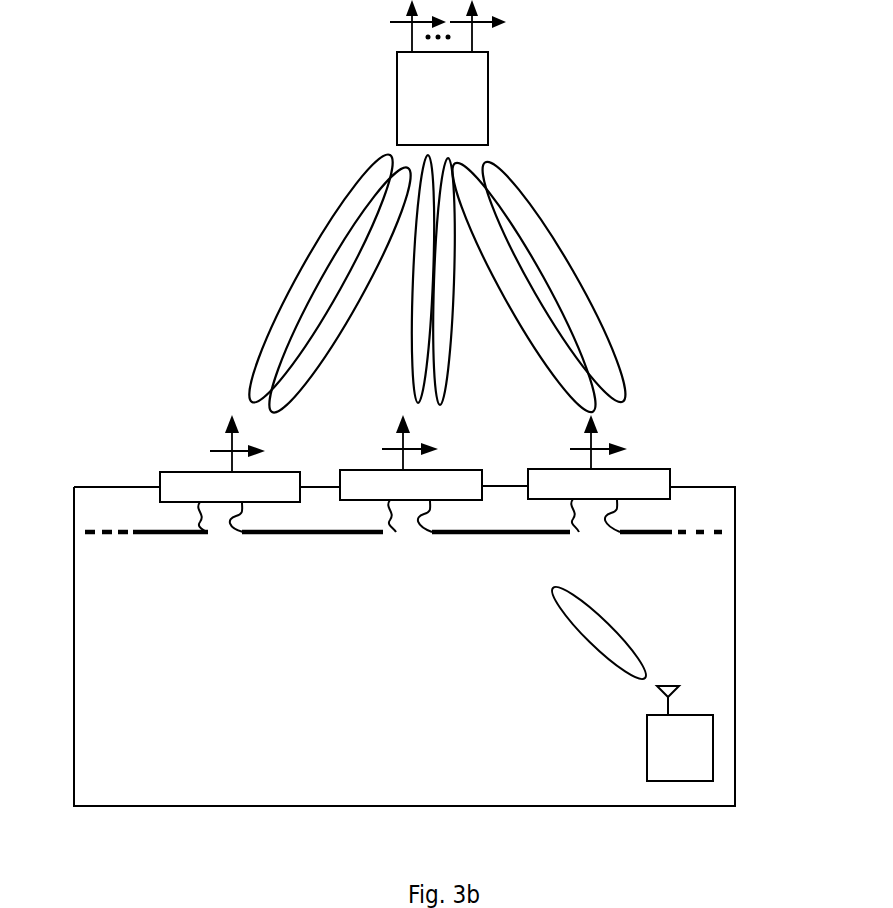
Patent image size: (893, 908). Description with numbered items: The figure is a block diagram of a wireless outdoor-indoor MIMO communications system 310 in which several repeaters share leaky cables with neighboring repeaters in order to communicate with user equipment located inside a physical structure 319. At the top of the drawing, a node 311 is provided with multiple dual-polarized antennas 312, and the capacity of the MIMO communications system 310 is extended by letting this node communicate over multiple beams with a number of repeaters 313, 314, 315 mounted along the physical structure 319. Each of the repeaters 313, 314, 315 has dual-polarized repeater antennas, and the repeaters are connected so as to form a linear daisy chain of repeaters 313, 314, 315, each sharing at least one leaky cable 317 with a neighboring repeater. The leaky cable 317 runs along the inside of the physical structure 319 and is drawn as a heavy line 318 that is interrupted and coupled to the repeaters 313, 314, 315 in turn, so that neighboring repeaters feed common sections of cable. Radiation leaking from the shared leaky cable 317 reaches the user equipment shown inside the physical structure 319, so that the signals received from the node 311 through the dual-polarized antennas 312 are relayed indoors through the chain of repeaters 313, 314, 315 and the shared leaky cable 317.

The MIMO communications system 310 is at (238, 152).
The node 311 is at (397, 84).
The dual-polarized antennas 312 is at (412, 45).
The repeater 313 is at (160, 473).
The repeater 314 is at (483, 468).
The repeater 315 is at (672, 468).
The leaky cable 317 is at (497, 533).
The leaky feeder cable 318 is at (305, 530).
The physical structure 319 is at (150, 575).